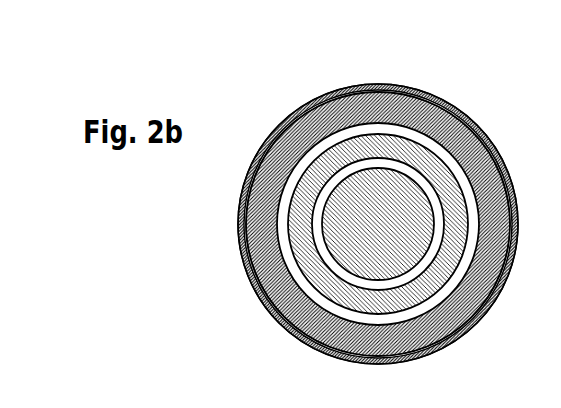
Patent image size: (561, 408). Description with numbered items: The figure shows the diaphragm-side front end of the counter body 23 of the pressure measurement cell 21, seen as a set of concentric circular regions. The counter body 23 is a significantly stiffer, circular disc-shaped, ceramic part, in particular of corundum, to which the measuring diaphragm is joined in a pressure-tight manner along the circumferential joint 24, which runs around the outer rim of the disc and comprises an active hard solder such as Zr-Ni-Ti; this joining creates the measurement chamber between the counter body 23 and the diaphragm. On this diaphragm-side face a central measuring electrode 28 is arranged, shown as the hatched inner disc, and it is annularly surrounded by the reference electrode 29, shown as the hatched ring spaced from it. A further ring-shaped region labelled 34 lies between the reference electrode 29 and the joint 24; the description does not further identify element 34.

The pressure measurement cell 21 is at (278, 94).
The counter body 23 is at (477, 320).
The circumferential joint 24 is at (451, 119).
The measuring electrode 28 is at (347, 262).
The reference electrode 29 is at (308, 288).
The outer jacket surface 34 is at (240, 243).